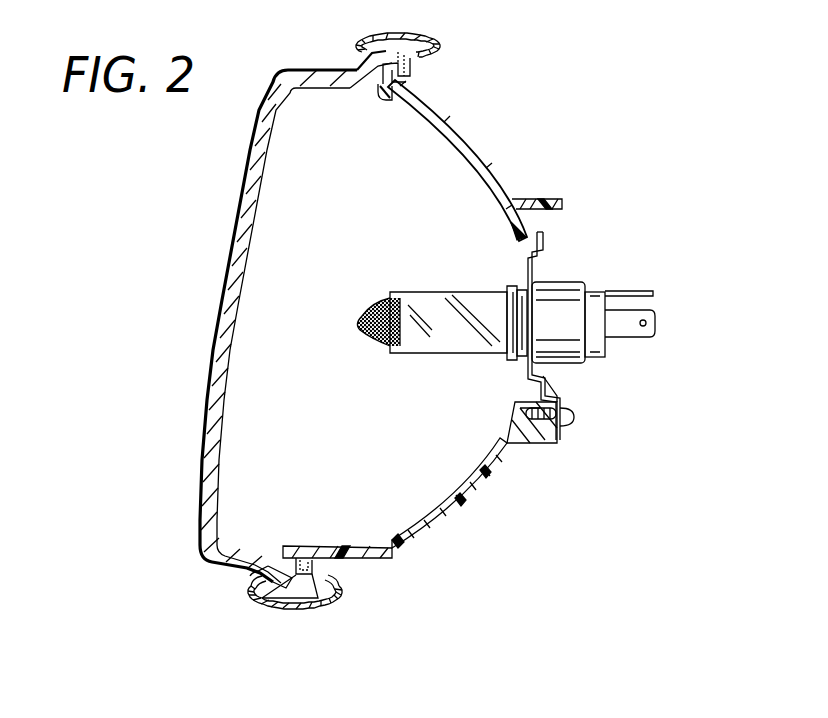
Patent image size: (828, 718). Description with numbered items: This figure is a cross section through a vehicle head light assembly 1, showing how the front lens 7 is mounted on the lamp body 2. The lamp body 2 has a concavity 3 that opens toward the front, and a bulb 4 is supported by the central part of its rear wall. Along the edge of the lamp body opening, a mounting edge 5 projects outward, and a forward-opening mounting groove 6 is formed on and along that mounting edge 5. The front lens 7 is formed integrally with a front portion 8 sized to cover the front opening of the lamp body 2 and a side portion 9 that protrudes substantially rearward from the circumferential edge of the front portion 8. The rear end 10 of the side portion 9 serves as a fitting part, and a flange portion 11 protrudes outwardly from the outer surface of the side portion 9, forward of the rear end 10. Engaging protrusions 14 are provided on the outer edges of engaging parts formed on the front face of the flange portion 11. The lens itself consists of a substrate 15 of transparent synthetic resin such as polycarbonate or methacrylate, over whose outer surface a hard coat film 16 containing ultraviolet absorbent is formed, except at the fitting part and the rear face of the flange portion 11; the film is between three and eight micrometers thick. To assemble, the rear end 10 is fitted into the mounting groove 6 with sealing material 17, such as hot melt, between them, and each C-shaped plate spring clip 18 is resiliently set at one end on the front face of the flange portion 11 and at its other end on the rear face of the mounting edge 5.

The vehicle head light assembly 1 is at (236, 158).
The lamp body 2 is at (472, 133).
The concavity 3 is at (408, 526).
The bulb 4 is at (435, 300).
The mounting edge 5 is at (412, 76).
The mounting groove 6 is at (412, 36).
The front lens 7 is at (224, 265).
The front portion 8 is at (256, 221).
The side portion 9 is at (242, 556).
The rear end 10 is at (384, 86).
The flange portion 11 is at (380, 44).
The engaging protrusion 14 is at (358, 47).
The substrate 15 is at (230, 341).
The hard coat film 16 is at (218, 326).
The sealing material 17 is at (320, 571).
The clip 18 is at (442, 46).